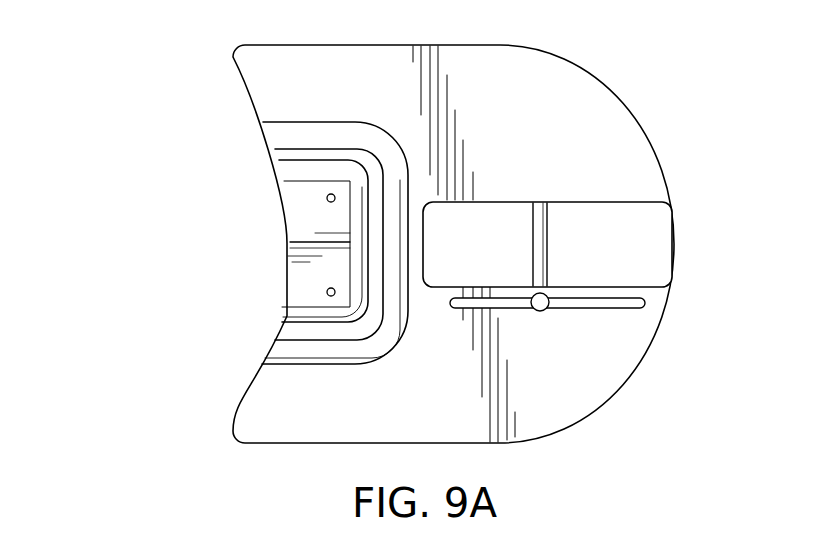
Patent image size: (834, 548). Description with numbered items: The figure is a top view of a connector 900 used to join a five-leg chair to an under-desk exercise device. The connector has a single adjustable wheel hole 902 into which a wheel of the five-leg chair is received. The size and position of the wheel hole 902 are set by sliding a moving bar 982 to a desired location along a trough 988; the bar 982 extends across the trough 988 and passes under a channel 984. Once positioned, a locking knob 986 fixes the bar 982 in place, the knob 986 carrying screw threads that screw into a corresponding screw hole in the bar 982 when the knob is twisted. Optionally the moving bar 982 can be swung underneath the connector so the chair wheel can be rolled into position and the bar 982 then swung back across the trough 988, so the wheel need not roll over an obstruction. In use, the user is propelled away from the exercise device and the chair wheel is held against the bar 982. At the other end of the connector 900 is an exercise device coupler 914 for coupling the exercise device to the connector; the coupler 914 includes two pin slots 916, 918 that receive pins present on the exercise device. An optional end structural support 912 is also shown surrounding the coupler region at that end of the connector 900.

The connector 900 is at (650, 92).
The adjustable wheel hole 902 is at (463, 220).
The end structural support 912 is at (280, 352).
The exercise device coupler 914 is at (286, 291).
The pin slot 916 is at (327, 292).
The pin slot 918 is at (327, 197).
The moving bar 982 is at (540, 229).
The channel 984 is at (645, 304).
The locking knob 986 is at (548, 297).
The trough 988 is at (680, 203).